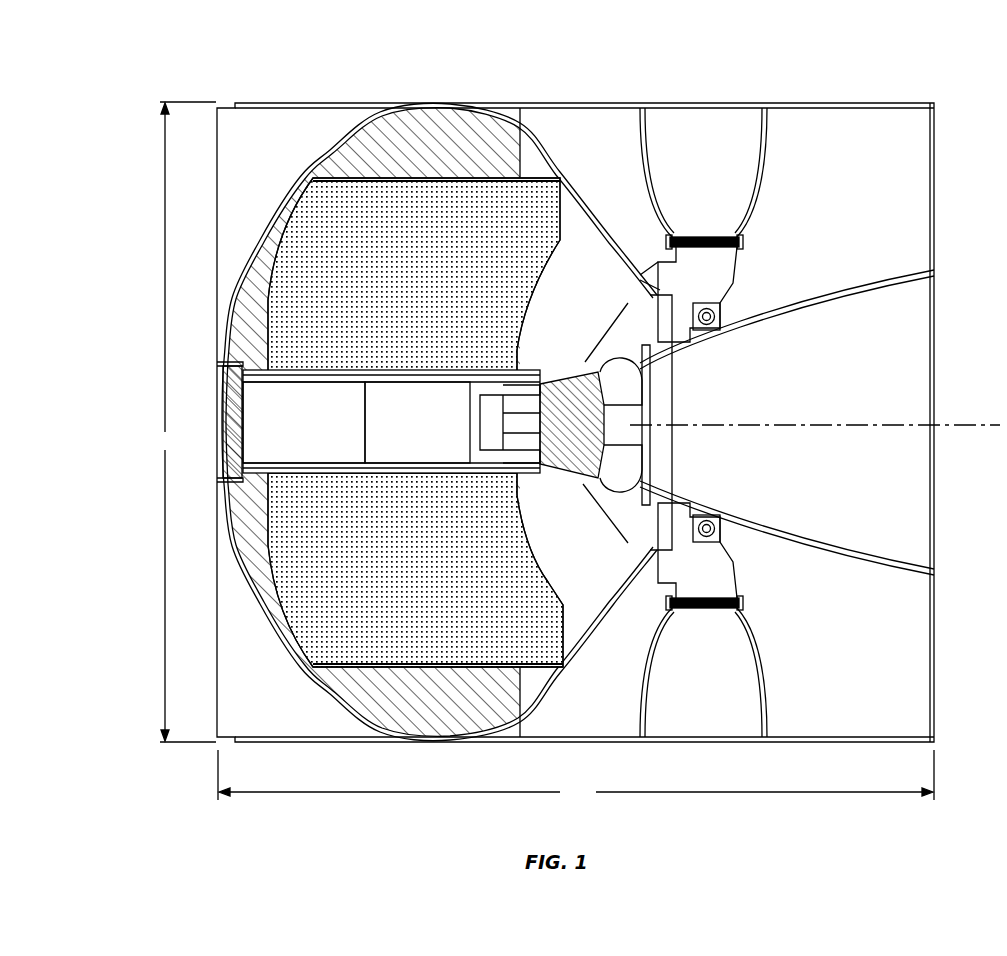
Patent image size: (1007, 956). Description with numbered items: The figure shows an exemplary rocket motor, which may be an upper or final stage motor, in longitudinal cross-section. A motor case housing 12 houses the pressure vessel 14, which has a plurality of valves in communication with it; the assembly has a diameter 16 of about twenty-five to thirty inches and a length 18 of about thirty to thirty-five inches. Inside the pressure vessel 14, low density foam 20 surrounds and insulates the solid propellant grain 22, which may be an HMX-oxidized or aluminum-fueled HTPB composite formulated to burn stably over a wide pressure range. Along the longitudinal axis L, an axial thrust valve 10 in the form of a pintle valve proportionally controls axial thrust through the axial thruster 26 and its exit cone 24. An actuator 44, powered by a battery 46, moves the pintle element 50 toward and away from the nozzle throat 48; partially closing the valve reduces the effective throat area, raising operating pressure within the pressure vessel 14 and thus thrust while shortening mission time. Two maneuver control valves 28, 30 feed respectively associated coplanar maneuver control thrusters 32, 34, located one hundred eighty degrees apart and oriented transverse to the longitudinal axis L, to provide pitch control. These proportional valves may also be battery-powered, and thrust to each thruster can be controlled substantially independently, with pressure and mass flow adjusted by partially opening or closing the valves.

The axial thrust valve 10 is at (616, 426).
The motor case housing 12 is at (870, 105).
The pressure vessel 14 is at (327, 155).
The diameter 16 is at (186, 422).
The length 18 is at (576, 777).
The low density foam 20 is at (383, 147).
The solid propellant grain 22 is at (521, 212).
The exit cone 24 is at (868, 290).
The axial thruster 26 is at (930, 580).
The maneuver control valve 28 is at (720, 320).
The maneuver control valve 30 is at (720, 530).
The maneuver control thruster 32 is at (765, 175).
The maneuver control thruster 34 is at (770, 690).
The actuator 44 is at (452, 422).
The battery 46 is at (304, 422).
The nozzle throat 48 is at (672, 407).
The pintle element 50 is at (555, 378).
The longitudinal axis L is at (845, 430).